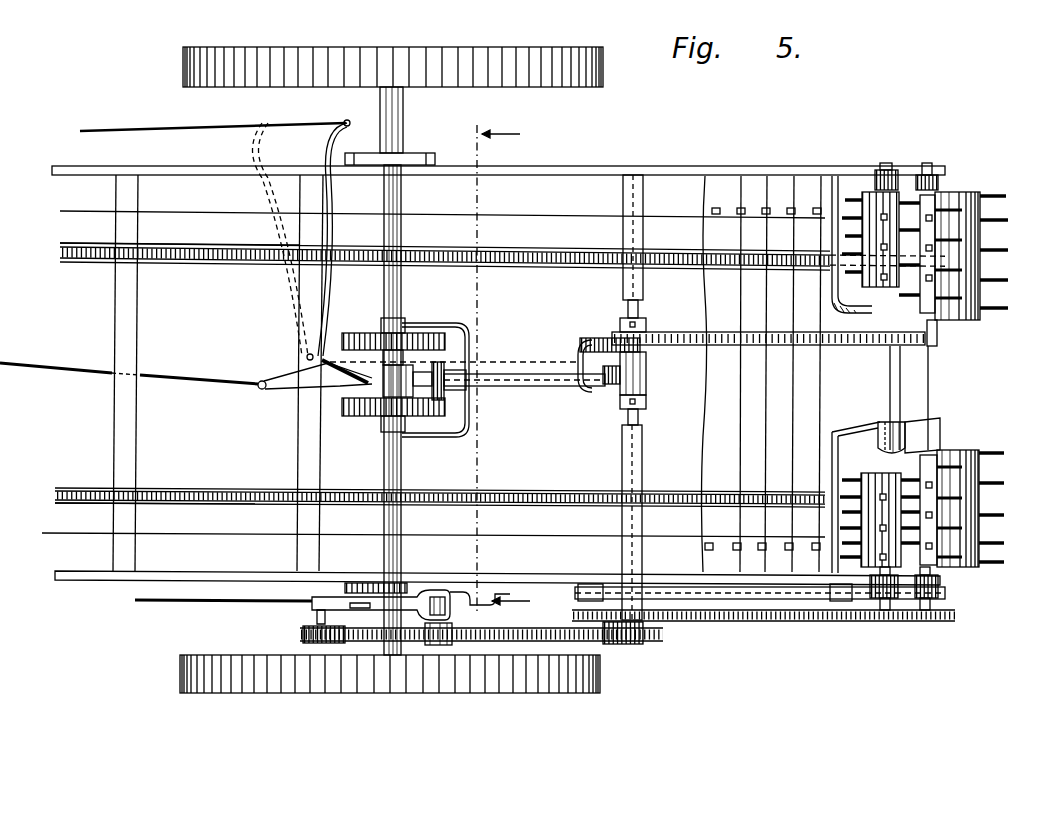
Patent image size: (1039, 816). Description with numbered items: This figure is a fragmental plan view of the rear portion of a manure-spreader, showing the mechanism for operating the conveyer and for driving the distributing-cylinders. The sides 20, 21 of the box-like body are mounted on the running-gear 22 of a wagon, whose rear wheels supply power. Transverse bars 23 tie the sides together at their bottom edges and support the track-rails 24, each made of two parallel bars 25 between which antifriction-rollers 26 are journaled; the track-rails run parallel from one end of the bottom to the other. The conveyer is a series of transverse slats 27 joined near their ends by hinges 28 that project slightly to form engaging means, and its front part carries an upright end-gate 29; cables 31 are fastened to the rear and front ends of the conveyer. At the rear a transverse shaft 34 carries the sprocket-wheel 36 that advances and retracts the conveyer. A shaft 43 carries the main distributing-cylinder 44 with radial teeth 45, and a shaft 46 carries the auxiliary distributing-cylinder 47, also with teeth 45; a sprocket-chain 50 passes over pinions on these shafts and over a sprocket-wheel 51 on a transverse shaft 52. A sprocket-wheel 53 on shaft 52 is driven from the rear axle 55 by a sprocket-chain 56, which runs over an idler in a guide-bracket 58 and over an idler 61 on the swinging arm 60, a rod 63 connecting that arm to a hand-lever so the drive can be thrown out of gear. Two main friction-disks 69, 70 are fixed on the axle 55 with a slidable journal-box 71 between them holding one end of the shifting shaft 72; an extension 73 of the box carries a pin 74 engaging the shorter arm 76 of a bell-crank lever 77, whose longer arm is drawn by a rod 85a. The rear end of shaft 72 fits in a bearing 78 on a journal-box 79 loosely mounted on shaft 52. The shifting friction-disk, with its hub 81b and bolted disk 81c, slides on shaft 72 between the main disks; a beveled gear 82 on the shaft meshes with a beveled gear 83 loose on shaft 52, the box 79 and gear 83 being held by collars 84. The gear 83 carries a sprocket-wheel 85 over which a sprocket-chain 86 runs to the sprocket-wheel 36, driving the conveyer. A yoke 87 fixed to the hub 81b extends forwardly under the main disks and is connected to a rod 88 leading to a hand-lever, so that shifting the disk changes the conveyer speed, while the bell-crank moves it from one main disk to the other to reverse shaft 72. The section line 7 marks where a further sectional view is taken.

The section line 7 is at (502, 363).
The side of the body 20 is at (102, 580).
The side of the body 21 is at (68, 160).
The running-gear 22 is at (410, 40).
The transverse bars 23 is at (128, 428).
The track-rails 24 is at (248, 259).
The parallel bars 25 is at (62, 251).
The antifriction-rollers 26 is at (205, 242).
The slats 27 is at (690, 463).
The hinges 28 is at (714, 208).
The end-gate 29 is at (832, 298).
The cables 31 is at (66, 212).
The transverse shaft 34 is at (930, 412).
The sprocket-wheel 36 is at (925, 346).
The shaft 43 is at (938, 330).
The main distributing-cylinder 44 is at (955, 452).
The radial teeth 45 is at (858, 200).
The shaft 46 is at (880, 300).
The auxiliary distributing-cylinder 47 is at (872, 284).
The sprocket-chain 50 is at (778, 622).
The sprocket-wheel 51 is at (570, 604).
The transverse shaft 52 is at (640, 420).
The sprocket-wheel 53 is at (665, 634).
The rear axle 55 is at (401, 470).
The sprocket-chain 56 is at (606, 644).
The guide-bracket 58 is at (440, 647).
The arm 60 is at (330, 597).
The idler 61 is at (302, 617).
The rod 63 is at (240, 603).
The main friction-disk 69 is at (385, 398).
The main friction-disk 70 is at (350, 334).
The journal-box 71 is at (384, 418).
The shifting shaft 72 is at (512, 374).
The extension 73 is at (345, 410).
The pin 74 is at (292, 374).
The shorter arm 76 is at (298, 388).
The bell-crank lever 77 is at (270, 200).
The bearing 78 is at (612, 386).
The journal-box 79 is at (646, 378).
The hub 81b is at (446, 390).
The disk 81c is at (446, 394).
The beveled gear 82 is at (578, 358).
The beveled gear 83 is at (598, 338).
The collars 84 is at (646, 324).
The sprocket-wheel 85 is at (616, 320).
The rod 85a is at (124, 130).
The sprocket-chain 86 is at (776, 332).
The yoke 87 is at (470, 345).
The rod 88 is at (200, 378).